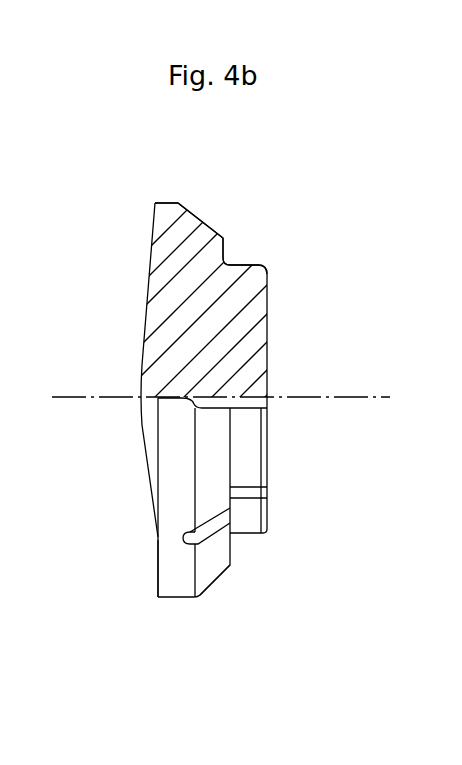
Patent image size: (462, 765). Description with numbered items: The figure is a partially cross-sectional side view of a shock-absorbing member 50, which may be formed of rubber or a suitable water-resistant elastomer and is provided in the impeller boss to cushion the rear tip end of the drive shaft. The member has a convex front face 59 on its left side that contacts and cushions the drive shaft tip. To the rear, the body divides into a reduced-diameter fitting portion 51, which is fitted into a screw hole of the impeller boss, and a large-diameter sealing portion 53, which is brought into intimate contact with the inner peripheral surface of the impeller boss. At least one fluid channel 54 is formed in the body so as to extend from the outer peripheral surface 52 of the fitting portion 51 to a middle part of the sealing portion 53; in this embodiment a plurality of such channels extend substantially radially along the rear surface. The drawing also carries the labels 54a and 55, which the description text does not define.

The shock-absorbing member 50 is at (224, 375).
The reduced-diameter fitting portion 51 is at (270, 435).
The outer peripheral surface 52 is at (248, 453).
The large-diameter sealing portion 53 is at (163, 193).
The fluid channel 54 is at (225, 237).
The inclined surface 54a is at (198, 206).
The retaining tab 55 is at (185, 533).
The convex front face 59 is at (137, 432).